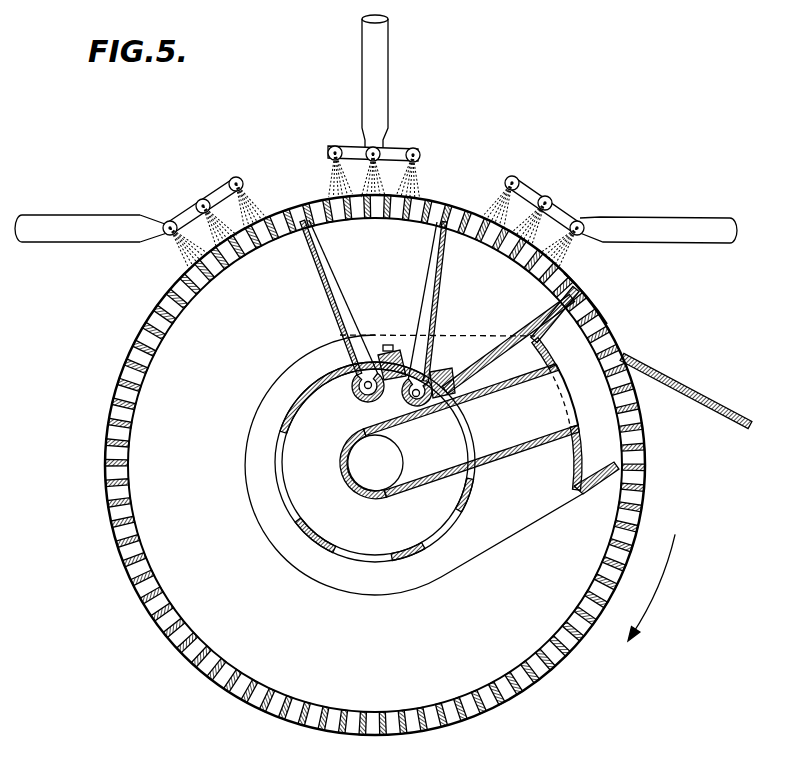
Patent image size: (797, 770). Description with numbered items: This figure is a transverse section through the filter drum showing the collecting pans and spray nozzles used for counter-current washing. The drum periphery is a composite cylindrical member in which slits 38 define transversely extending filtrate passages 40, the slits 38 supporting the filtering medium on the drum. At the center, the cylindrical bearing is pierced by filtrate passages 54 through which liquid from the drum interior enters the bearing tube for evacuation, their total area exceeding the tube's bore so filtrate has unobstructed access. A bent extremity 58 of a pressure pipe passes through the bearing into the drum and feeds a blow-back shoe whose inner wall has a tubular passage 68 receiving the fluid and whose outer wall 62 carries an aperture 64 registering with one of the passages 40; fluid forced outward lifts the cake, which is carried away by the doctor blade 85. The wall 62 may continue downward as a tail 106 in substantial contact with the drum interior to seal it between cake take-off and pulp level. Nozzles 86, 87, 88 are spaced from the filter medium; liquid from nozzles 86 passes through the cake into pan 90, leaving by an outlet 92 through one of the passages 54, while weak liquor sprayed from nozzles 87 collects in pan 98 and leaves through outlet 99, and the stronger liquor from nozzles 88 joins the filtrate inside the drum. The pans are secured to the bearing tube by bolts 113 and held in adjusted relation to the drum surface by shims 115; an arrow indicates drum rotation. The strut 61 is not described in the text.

The slits 38 is at (637, 488).
The filtrate passages 40 is at (570, 288).
The filtrate passages 54 is at (342, 373).
The bent extremity 58 is at (425, 487).
The support arm 61 is at (542, 323).
The outer wall 62 is at (605, 400).
The aperture 64 is at (610, 337).
The tubular passage 68 is at (567, 390).
The doctor blade 85 is at (713, 402).
The nozzles 86 is at (530, 190).
The nozzles 87 is at (395, 147).
The nozzles 88 is at (213, 192).
The pan 90 is at (516, 337).
The outlet 92 is at (407, 402).
The pan 98 is at (326, 300).
The outlet 99 is at (360, 400).
The tail 106 is at (610, 540).
The bolts 113 is at (450, 372).
The shims 115 is at (415, 368).